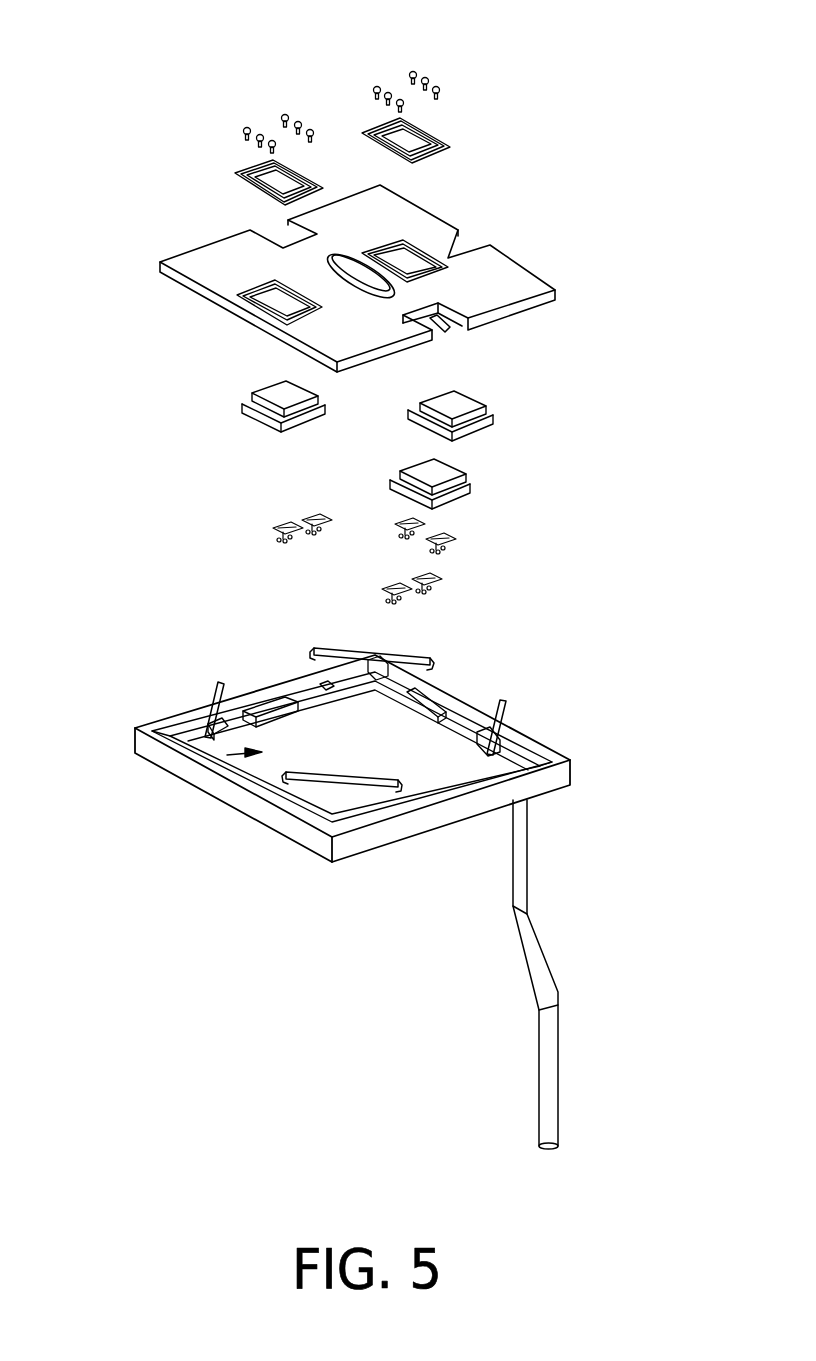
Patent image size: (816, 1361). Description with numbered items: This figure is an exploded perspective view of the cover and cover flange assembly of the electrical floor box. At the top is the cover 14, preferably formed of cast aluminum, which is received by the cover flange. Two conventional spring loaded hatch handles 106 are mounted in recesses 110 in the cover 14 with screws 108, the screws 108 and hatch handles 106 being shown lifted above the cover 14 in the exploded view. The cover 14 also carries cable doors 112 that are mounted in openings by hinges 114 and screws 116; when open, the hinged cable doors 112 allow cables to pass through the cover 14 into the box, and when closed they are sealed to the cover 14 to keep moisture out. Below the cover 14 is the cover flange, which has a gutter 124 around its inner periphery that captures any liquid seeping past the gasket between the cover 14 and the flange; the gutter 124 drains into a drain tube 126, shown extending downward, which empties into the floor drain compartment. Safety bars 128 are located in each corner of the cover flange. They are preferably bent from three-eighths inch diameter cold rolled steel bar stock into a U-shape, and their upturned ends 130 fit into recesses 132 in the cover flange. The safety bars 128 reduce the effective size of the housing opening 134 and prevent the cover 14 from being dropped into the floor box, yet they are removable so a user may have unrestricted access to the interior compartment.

The cover 14 is at (528, 268).
The spring loaded hatch handles 106 is at (240, 174).
The screws 108 is at (279, 100).
The recesses 110 is at (412, 267).
The cable doors 112 is at (484, 394).
The hinges 114 is at (447, 537).
The screws 116 is at (440, 608).
The gutter 124 is at (458, 724).
The drain tube 126 is at (545, 910).
The safety bars 128 is at (220, 682).
The upturned ends 130 is at (317, 652).
The recesses 132 is at (403, 708).
The housing opening 134 is at (227, 755).